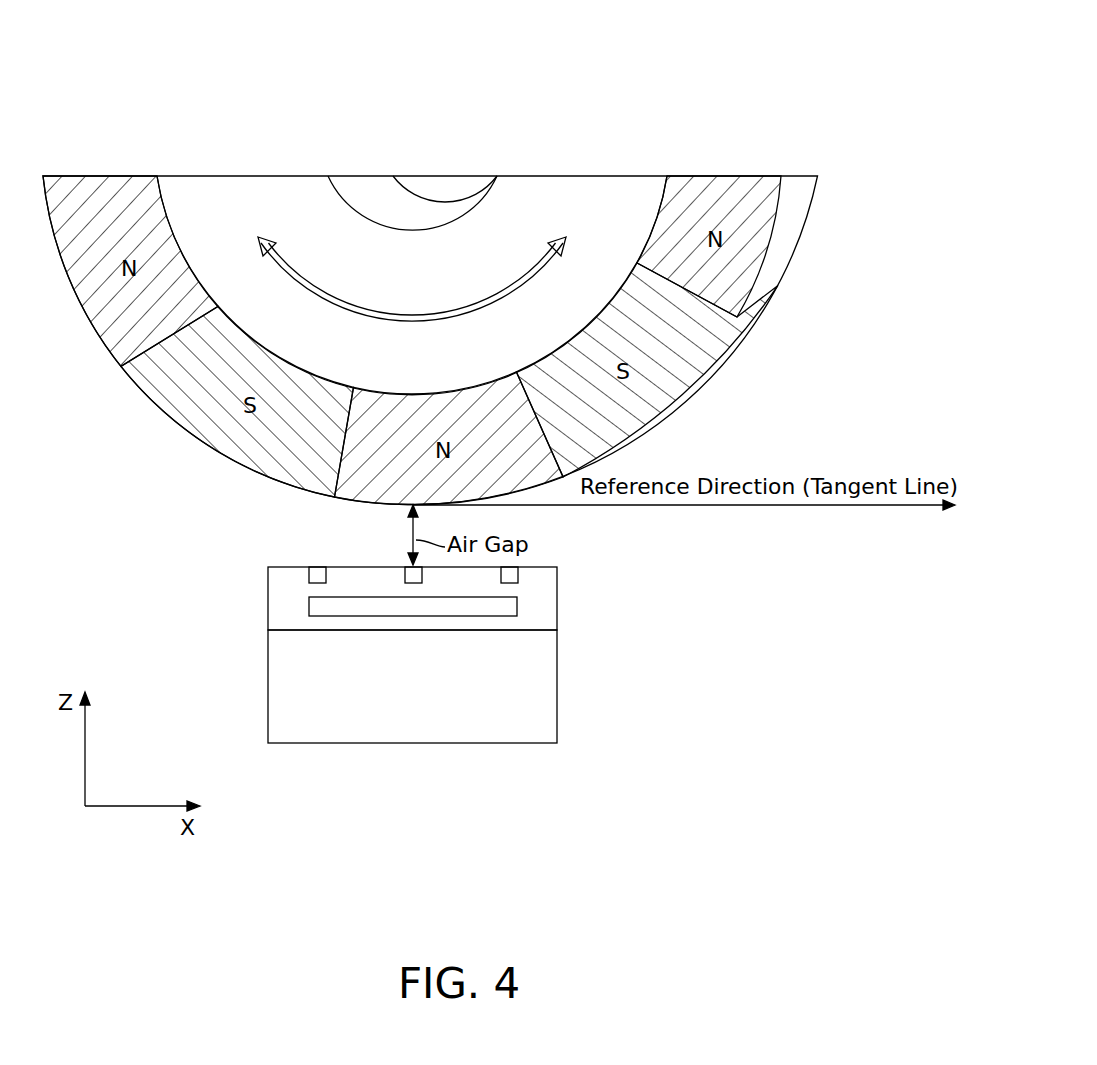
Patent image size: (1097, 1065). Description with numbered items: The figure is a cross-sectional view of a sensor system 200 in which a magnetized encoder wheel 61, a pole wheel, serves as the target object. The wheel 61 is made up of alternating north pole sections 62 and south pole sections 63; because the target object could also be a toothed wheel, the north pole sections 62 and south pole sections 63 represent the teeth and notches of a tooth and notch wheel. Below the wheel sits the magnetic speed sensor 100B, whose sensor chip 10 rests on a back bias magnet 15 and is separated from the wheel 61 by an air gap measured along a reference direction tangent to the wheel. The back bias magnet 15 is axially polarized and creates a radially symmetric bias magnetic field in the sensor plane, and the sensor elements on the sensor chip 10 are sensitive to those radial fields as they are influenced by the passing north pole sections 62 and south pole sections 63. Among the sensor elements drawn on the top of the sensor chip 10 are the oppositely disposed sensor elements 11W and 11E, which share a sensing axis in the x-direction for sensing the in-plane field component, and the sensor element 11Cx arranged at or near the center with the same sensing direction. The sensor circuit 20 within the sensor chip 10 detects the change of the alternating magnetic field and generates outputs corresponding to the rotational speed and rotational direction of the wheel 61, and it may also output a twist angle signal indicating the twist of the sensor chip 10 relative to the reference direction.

The sensor system 200 is at (672, 72).
The magnetized encoder wheel 61 is at (590, 176).
The north pole sections 62 is at (748, 236).
The south pole sections 63 is at (652, 399).
The magnetic speed sensor 100B is at (378, 613).
The sensor chip 10 is at (560, 598).
The back bias magnet 15 is at (560, 686).
The sensor circuit 20 is at (312, 606).
The sensor element 11W is at (318, 565).
The sensor element 11Cx is at (410, 565).
The sensor element 11E is at (522, 572).